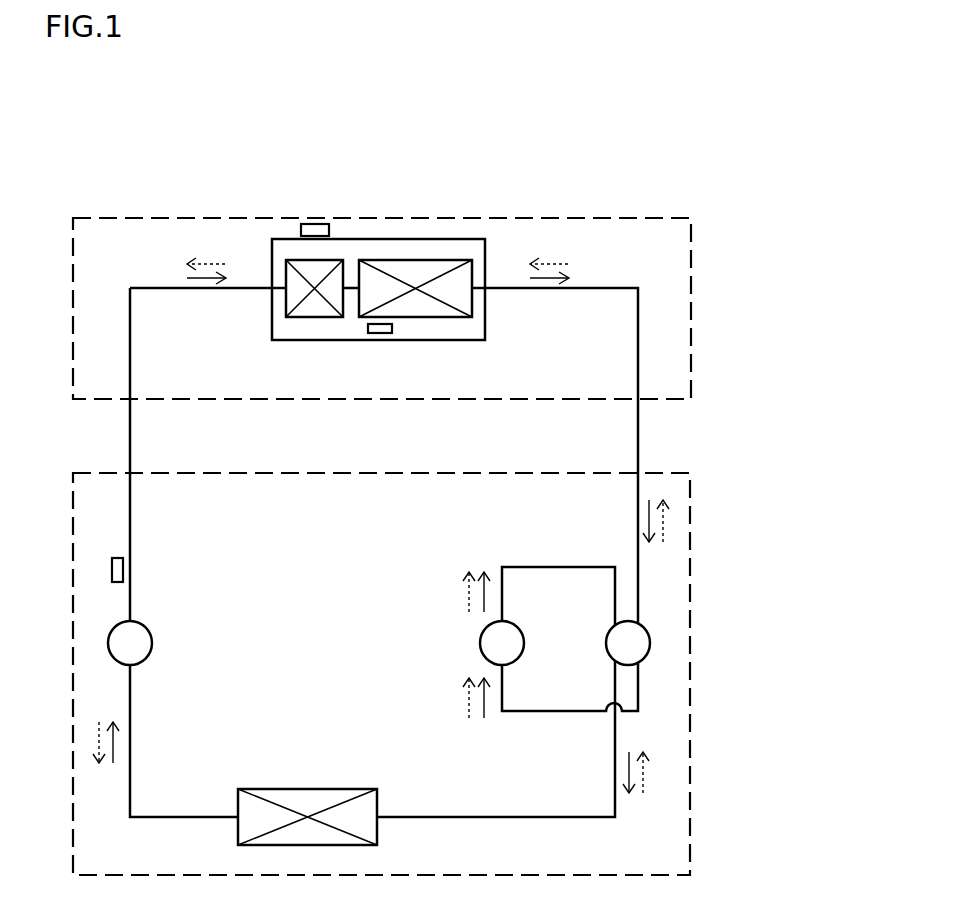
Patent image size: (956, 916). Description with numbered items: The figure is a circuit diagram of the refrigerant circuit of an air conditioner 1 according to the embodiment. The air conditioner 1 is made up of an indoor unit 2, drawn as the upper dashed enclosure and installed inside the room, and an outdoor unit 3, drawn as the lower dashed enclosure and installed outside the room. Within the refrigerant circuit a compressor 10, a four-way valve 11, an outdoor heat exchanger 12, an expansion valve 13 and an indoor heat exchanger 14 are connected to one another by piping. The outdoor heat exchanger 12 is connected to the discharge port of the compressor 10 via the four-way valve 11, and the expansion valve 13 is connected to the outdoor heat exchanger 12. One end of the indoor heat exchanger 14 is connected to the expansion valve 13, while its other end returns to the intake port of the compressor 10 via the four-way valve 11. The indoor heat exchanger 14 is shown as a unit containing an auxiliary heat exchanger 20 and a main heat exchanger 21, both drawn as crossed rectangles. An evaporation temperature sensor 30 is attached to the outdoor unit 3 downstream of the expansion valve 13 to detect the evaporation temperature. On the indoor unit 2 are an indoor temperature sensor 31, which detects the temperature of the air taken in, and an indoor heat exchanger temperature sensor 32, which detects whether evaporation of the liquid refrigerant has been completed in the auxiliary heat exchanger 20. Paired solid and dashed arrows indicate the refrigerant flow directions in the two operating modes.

The air conditioner 1 is at (776, 185).
The indoor unit 2 is at (691, 273).
The outdoor unit 3 is at (690, 560).
The compressor 10 is at (480, 643).
The four-way valve 11 is at (645, 627).
The outdoor heat exchanger 12 is at (337, 789).
The expansion valve 13 is at (147, 627).
The indoor heat exchanger 14 is at (460, 239).
The auxiliary heat exchanger 20 is at (325, 317).
The main heat exchanger 21 is at (458, 317).
The evaporation temperature sensor 30 is at (123, 566).
The indoor temperature sensor 31 is at (318, 224).
The indoor heat exchanger temperature sensor 32 is at (387, 333).